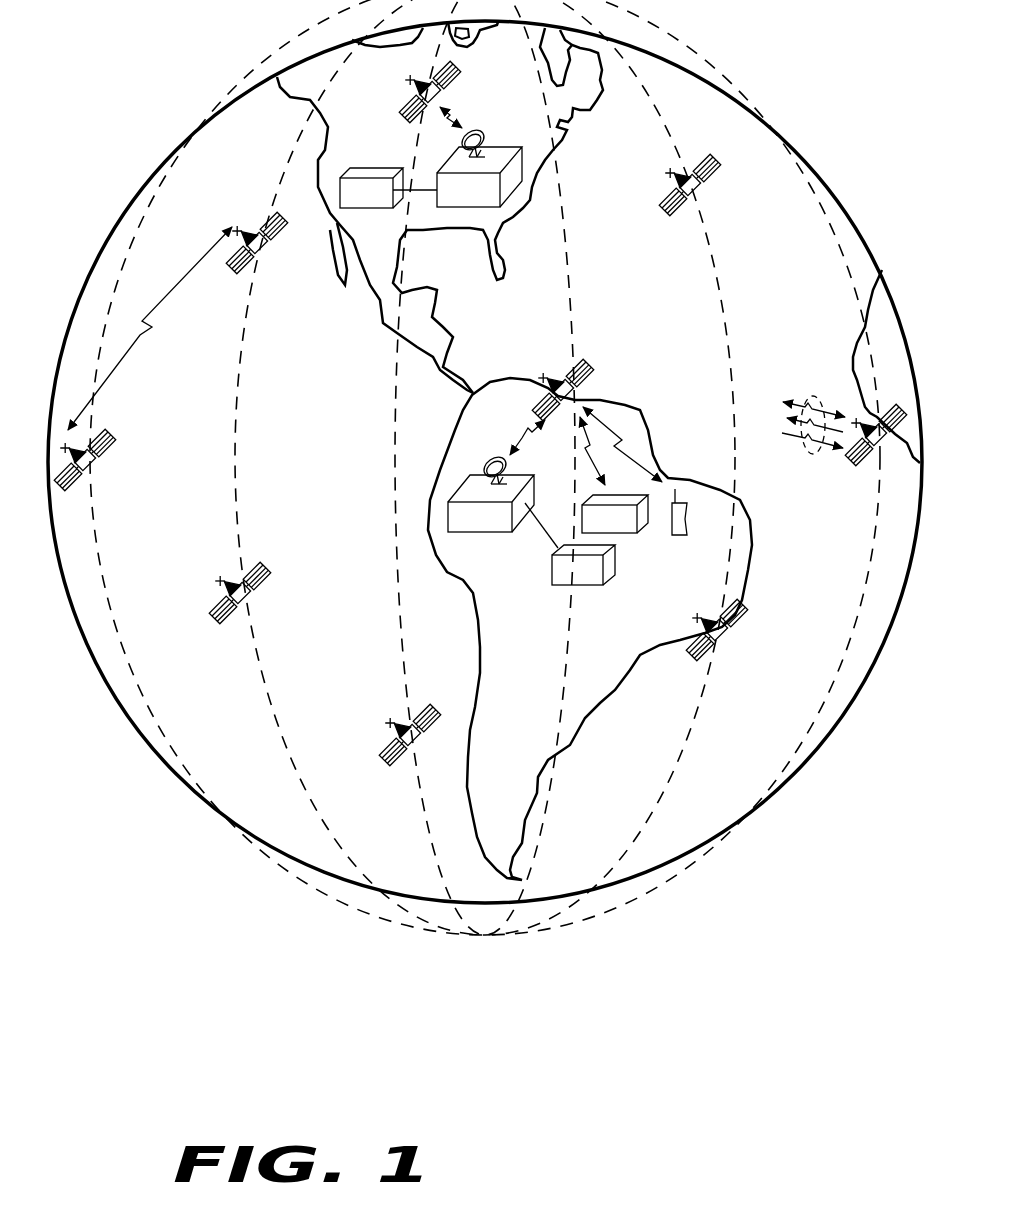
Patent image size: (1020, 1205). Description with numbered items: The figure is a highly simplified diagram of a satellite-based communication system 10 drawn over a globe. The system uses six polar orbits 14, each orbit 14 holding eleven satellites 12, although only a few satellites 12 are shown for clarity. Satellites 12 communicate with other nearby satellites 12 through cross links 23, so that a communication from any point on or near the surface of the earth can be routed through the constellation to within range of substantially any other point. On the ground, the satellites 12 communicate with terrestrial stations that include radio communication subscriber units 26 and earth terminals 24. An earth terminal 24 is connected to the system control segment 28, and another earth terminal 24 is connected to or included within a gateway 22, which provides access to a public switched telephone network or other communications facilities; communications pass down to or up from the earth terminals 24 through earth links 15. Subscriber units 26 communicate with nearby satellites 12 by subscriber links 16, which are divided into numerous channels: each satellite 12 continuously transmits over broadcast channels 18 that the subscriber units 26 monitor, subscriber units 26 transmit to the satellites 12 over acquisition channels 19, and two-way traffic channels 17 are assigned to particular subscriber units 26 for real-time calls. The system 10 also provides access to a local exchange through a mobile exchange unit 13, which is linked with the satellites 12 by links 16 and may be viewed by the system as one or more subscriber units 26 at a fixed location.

The communication system 10 is at (482, 1036).
The satellite 12 is at (408, 123).
The mobile exchange unit 13 is at (640, 520).
The polar orbit 14 is at (292, 158).
The earth link 15 is at (521, 432).
The subscriber link 16 is at (620, 436).
The traffic channel 17 is at (803, 398).
The broadcast channel 18 is at (787, 418).
The acquisition channel 19 is at (803, 437).
The gateway 22 is at (587, 585).
The cross link 23 is at (163, 316).
The earth terminal 24 is at (507, 148).
The subscriber unit 26 is at (682, 537).
The system control segment 28 is at (356, 207).